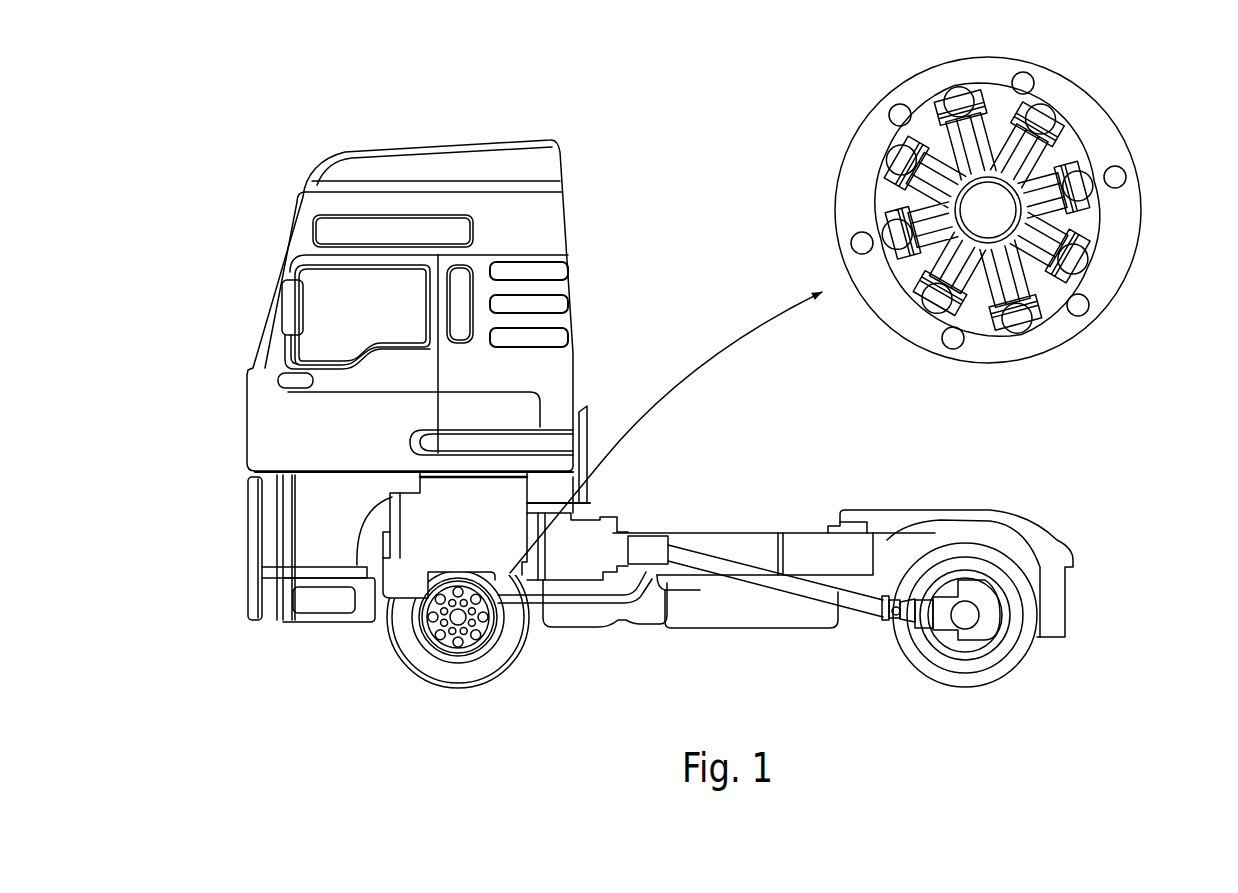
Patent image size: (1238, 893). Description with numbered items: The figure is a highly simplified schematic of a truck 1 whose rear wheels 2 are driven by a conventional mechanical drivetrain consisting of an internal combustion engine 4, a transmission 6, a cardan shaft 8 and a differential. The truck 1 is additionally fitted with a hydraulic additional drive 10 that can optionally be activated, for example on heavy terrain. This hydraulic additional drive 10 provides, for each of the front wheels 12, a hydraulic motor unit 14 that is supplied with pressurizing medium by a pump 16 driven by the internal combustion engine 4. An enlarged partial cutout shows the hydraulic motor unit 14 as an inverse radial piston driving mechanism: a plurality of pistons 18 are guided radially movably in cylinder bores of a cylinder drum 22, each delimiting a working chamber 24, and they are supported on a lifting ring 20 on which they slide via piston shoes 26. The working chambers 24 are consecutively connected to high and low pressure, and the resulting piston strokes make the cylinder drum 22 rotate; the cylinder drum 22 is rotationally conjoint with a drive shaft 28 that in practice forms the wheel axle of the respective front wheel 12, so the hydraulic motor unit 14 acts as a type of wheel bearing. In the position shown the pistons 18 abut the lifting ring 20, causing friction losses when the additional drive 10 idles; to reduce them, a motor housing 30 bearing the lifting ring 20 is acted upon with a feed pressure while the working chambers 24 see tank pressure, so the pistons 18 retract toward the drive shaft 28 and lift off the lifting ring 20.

The truck 1 is at (568, 167).
The rear wheels 2 is at (968, 677).
The internal combustion engine 4 is at (471, 533).
The transmission 6 is at (578, 555).
The cardan shaft 8 is at (823, 590).
The hydraulic additional drive 10 is at (413, 661).
The front wheels 12 is at (443, 665).
The hydraulic motor unit 14 is at (417, 627).
The pump 16 is at (638, 555).
The pistons 18 is at (1088, 214).
The lifting ring 20 is at (1097, 123).
The cylinder drum 22 is at (1083, 228).
The working chamber 24 is at (1055, 312).
The piston shoes 26 is at (892, 118).
The drive shaft 28 is at (983, 217).
The motor housing 30 is at (873, 318).